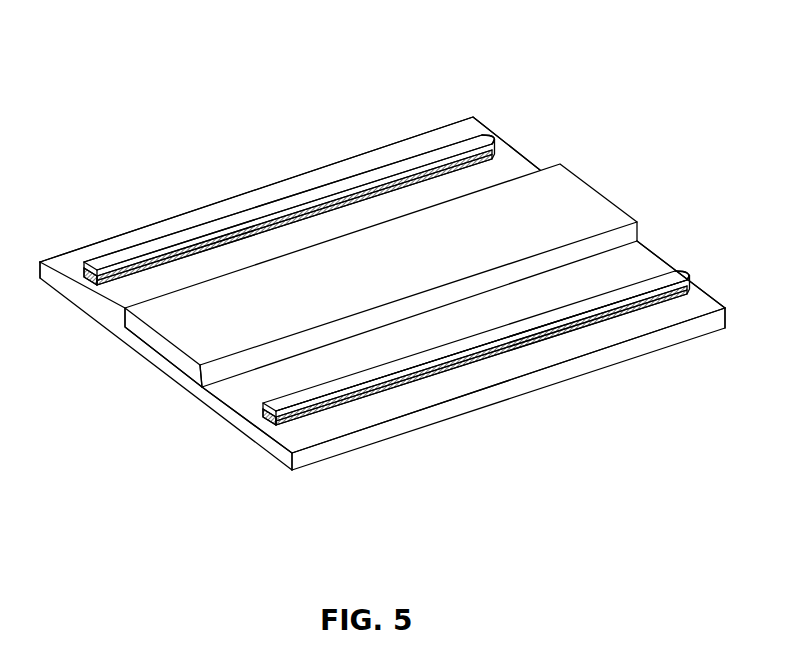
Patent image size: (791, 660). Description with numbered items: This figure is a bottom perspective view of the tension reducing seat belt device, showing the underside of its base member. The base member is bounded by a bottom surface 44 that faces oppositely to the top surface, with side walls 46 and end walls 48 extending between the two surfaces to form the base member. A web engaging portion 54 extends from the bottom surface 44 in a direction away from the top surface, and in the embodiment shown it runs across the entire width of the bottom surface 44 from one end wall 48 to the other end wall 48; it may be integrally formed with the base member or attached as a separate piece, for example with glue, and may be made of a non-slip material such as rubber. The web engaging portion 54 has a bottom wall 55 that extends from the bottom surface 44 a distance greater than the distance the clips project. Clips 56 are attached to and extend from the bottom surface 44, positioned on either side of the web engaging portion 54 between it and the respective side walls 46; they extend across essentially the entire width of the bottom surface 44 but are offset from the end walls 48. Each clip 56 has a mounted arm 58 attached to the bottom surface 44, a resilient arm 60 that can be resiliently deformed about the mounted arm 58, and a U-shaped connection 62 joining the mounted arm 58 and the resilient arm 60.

The bottom surface 44 is at (372, 366).
The side walls 46 is at (262, 188).
The end walls 48 is at (287, 455).
The web engaging portion 54 is at (217, 376).
The bottom wall 55 is at (512, 234).
The clips 56 is at (418, 151).
The mounted arm 58 is at (126, 277).
The resilient arm 60 is at (137, 250).
The U-shaped connection 62 is at (500, 145).